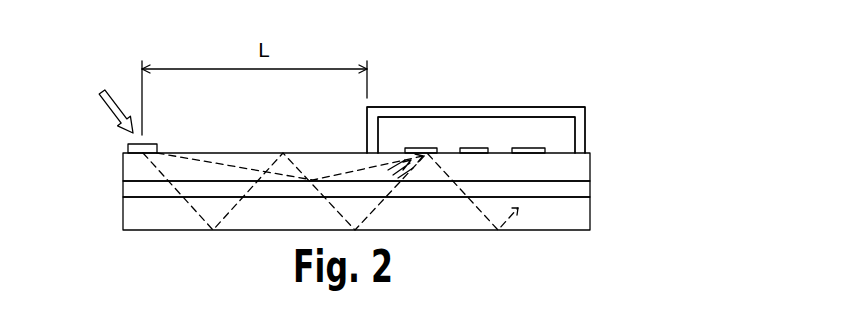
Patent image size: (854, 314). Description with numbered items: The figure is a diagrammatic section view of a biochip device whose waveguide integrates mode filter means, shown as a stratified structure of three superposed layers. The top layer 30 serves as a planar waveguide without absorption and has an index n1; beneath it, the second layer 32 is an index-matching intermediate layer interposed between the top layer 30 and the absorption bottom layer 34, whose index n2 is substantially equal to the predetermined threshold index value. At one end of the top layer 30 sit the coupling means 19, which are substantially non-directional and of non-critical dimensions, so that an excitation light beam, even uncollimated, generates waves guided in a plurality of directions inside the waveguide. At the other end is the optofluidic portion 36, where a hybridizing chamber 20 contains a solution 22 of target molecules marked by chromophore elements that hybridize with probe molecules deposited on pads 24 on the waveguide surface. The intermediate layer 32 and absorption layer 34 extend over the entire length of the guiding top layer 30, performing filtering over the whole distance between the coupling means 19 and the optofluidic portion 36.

The coupling means 19 is at (128, 150).
The hybridizing chamber 20 is at (423, 107).
The solution 22 is at (558, 128).
The pads 24 is at (490, 150).
The top layer 30 is at (582, 165).
The second layer 32 is at (582, 188).
The absorption bottom layer 34 is at (582, 212).
The optofluidic portion 36 is at (600, 97).